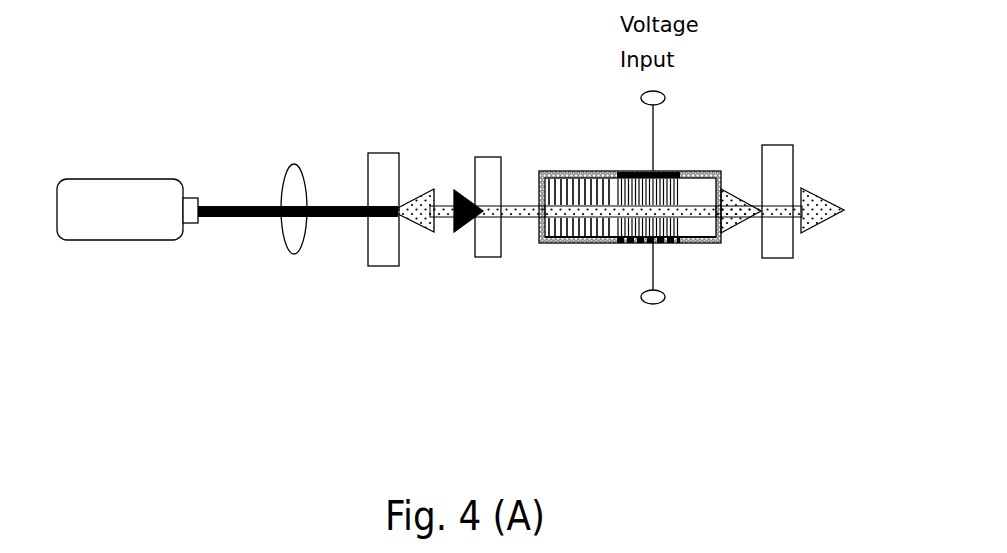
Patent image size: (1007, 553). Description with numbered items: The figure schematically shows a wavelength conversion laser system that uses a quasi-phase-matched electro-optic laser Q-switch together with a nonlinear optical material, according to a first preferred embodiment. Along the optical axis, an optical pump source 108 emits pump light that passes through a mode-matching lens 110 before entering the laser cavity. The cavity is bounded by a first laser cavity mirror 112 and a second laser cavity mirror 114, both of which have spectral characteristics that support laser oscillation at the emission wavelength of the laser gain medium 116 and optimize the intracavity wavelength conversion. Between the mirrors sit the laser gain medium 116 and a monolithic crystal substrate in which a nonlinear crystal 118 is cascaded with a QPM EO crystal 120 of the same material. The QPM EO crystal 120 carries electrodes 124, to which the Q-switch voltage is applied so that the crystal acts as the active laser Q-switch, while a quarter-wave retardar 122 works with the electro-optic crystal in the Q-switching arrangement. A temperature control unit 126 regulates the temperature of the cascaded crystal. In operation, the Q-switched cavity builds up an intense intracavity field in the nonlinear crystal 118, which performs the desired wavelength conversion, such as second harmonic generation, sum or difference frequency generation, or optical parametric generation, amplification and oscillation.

The optical pump source 108 is at (138, 161).
The mode-matching lens 110 is at (289, 162).
The laser cavity mirror 112 is at (379, 271).
The laser cavity mirror 114 is at (781, 270).
The laser gain medium 116 is at (480, 145).
The nonlinear crystal 118 is at (578, 193).
The QPM EO crystal 120 is at (642, 193).
The quarter-wave retardar 122 is at (693, 195).
The electrodes 124 is at (622, 243).
The temperature control unit 126 is at (693, 243).